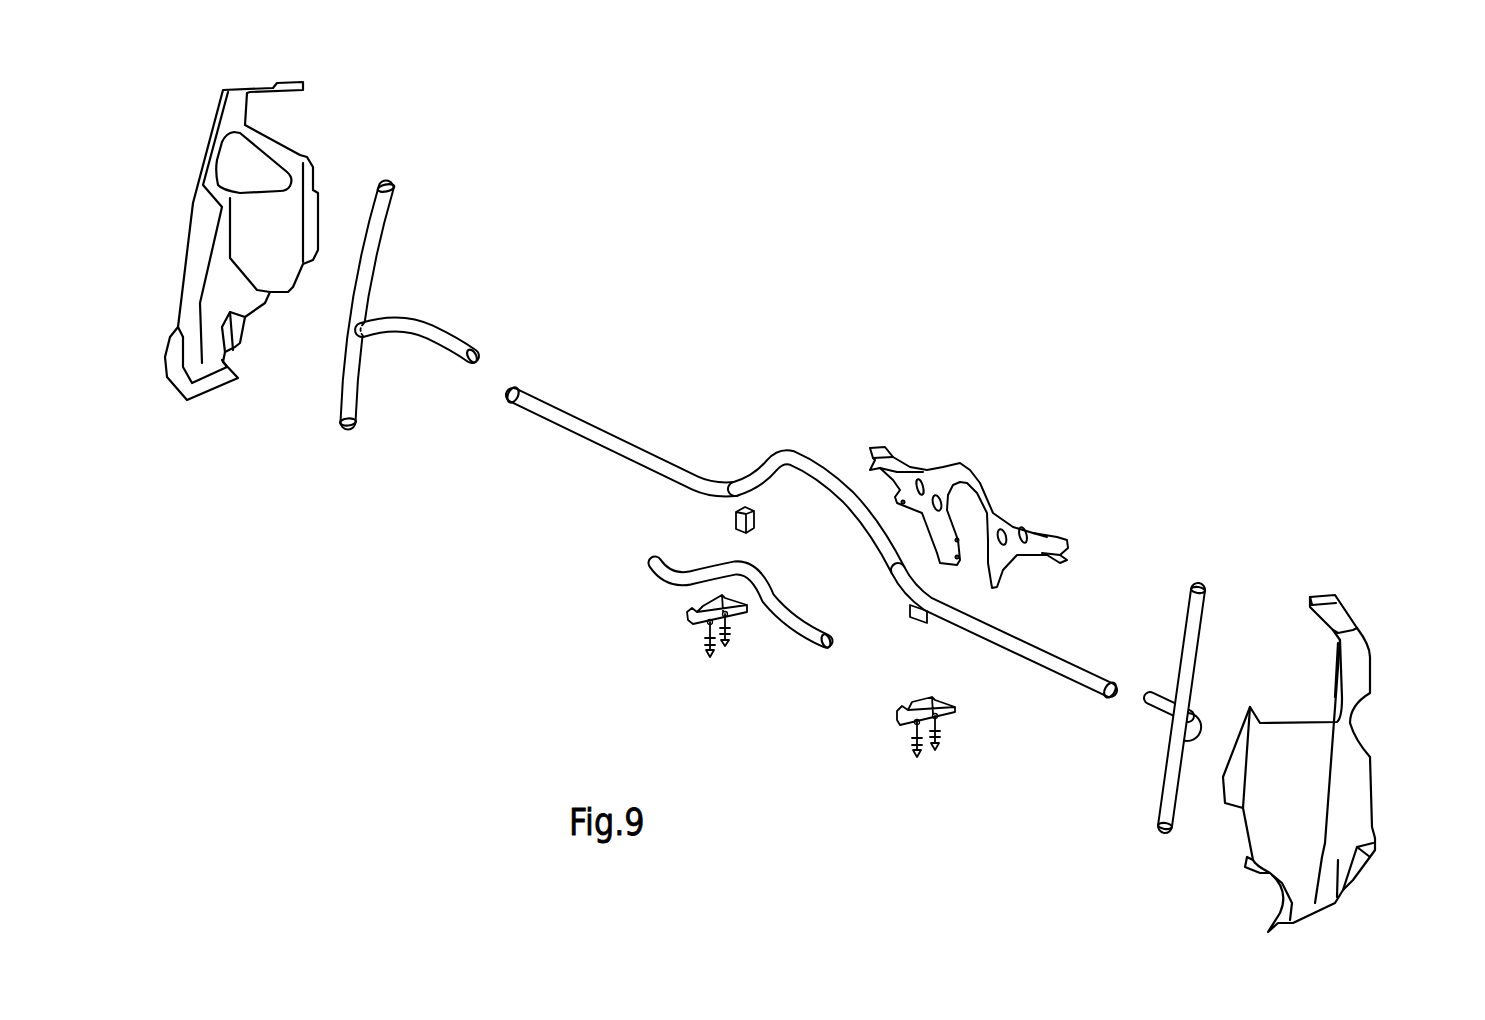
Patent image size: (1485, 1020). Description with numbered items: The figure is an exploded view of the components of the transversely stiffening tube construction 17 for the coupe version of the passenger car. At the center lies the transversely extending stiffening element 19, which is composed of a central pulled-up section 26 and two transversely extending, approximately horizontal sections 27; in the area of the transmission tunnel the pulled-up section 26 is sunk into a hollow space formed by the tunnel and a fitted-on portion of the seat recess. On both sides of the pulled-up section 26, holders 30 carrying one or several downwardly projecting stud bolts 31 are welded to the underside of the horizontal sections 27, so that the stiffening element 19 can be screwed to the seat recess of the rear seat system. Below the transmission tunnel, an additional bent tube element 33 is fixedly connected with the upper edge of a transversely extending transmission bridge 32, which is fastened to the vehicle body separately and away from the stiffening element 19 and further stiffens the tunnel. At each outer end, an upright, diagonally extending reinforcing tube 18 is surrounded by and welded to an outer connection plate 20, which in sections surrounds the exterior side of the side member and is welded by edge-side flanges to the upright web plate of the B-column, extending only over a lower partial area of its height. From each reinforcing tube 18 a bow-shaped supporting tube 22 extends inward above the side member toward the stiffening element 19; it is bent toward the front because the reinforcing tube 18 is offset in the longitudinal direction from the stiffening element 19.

The transversely stiffening tube construction 17 is at (811, 523).
The reinforcing tube 18 is at (380, 224).
The stiffening element 19 is at (690, 453).
The connection plate 20 is at (310, 143).
The supporting tube 22 is at (423, 337).
The central pulled-up section 26 is at (803, 463).
The transversely extending horizontal sections 27 is at (587, 425).
The holders 30 is at (681, 651).
The stud bolts 31 is at (707, 637).
The transmission bridge 32 is at (957, 470).
The bent tube element 33 is at (793, 637).